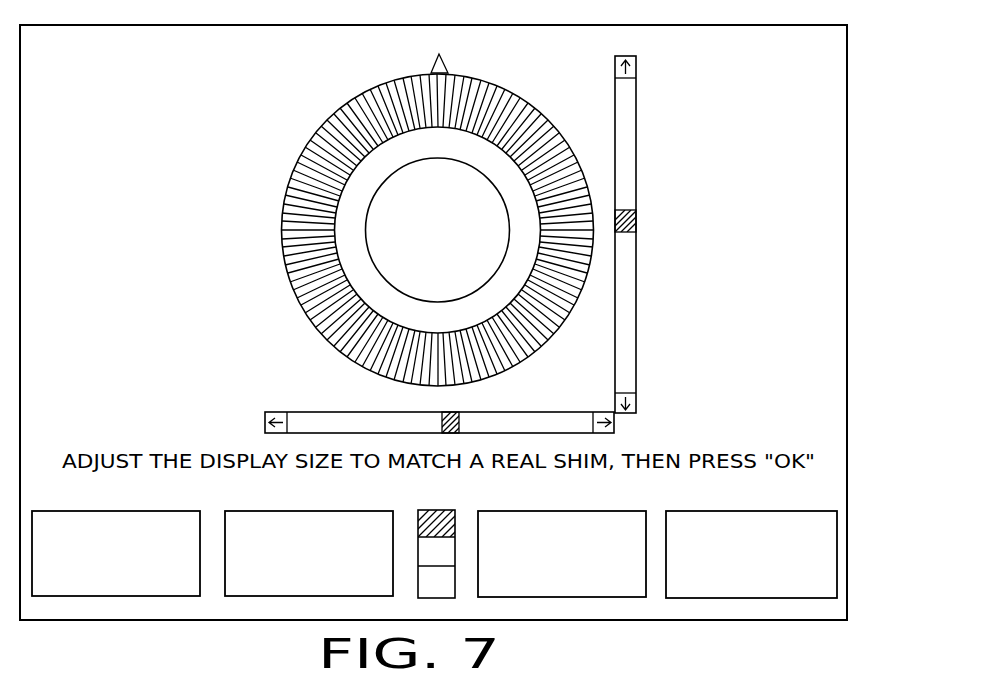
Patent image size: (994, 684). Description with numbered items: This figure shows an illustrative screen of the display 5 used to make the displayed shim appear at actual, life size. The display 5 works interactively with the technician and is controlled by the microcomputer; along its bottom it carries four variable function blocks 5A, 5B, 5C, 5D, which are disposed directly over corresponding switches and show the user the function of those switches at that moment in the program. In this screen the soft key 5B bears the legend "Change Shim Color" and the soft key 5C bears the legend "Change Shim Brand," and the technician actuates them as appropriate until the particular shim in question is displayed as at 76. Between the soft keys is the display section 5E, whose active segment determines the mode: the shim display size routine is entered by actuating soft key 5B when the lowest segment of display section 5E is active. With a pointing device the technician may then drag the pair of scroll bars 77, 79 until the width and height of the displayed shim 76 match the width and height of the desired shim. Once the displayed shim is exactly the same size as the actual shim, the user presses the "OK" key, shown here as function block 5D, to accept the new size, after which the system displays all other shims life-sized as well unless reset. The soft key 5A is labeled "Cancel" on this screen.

The display 5 is at (848, 200).
The displayed shim 76 is at (283, 206).
The scroll bar 77 is at (456, 412).
The scroll bar 79 is at (636, 220).
The function block 5A is at (120, 511).
The function block 5B is at (249, 511).
The function block 5C is at (618, 511).
The function block 5D is at (718, 511).
The display section 5E is at (437, 510).